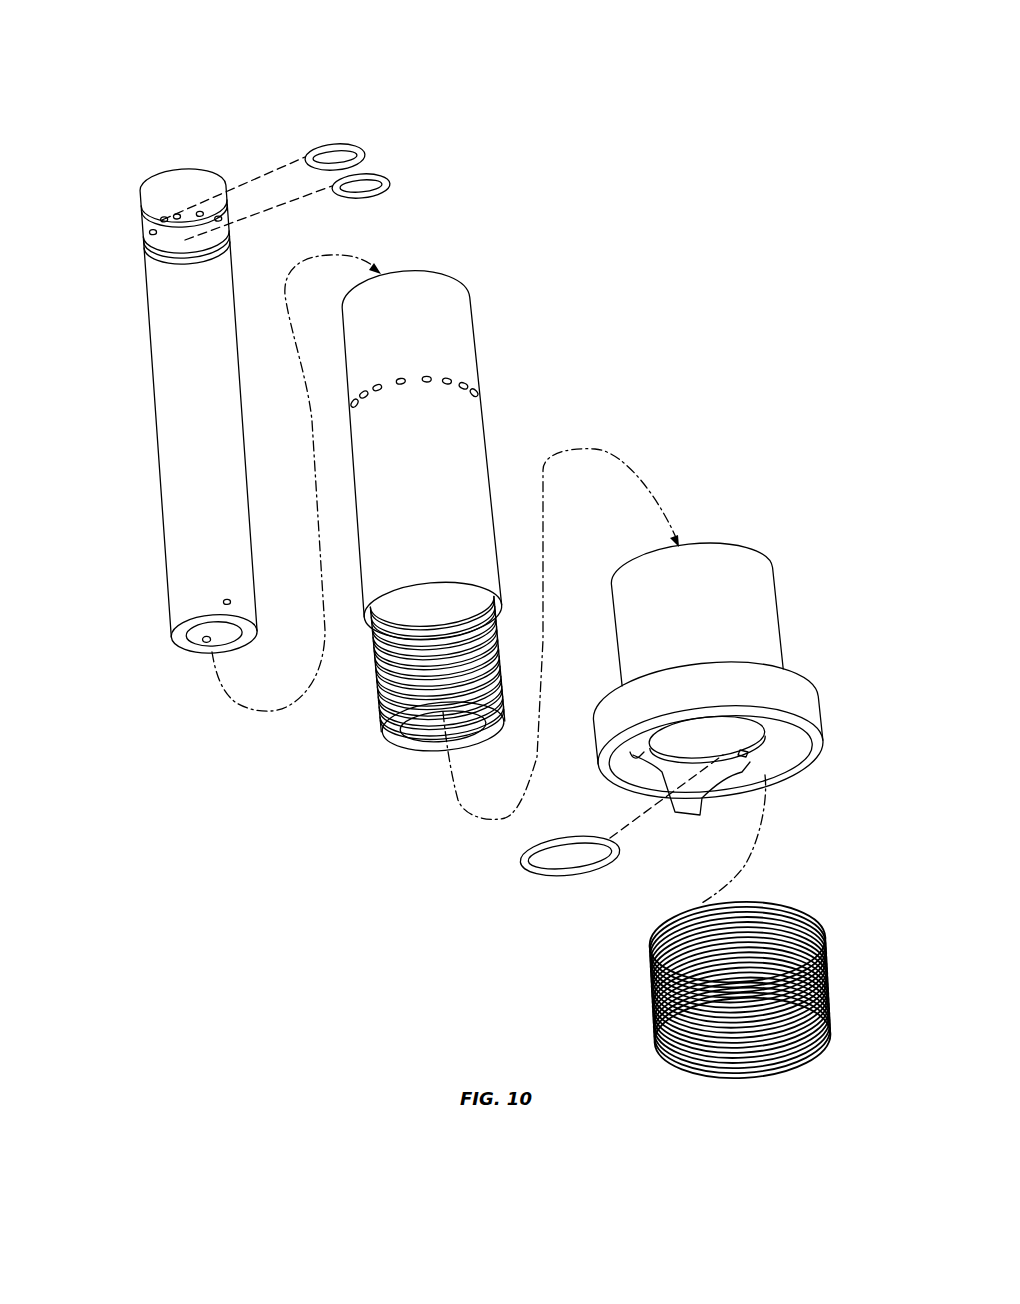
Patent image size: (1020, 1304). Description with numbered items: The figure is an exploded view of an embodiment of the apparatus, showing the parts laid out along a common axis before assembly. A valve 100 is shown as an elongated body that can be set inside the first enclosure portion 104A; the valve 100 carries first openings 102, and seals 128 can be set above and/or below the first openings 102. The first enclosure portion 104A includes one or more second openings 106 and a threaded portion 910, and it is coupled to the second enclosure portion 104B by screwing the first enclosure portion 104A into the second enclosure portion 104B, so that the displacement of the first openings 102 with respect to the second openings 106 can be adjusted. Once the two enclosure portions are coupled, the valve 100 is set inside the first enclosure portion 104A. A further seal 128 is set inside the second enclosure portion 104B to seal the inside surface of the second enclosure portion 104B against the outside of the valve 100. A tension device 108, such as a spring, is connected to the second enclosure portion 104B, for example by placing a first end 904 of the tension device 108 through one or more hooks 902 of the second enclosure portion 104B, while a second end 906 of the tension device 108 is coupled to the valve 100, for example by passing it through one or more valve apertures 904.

The valve 100 is at (191, 172).
The first openings 102 is at (157, 190).
The seals 128 is at (338, 144).
The first enclosure portion 104A is at (365, 290).
The second enclosure portion 104B is at (670, 548).
The second openings 106 is at (412, 382).
The first end 904 is at (228, 602).
The threaded portion 910 is at (388, 720).
The hooks 902 is at (700, 810).
The tension device 108 is at (771, 890).
The second end 906 is at (652, 972).